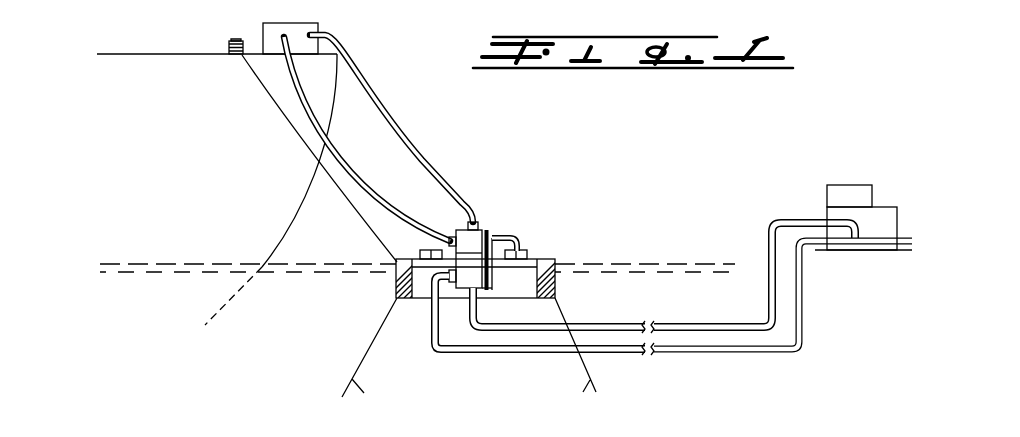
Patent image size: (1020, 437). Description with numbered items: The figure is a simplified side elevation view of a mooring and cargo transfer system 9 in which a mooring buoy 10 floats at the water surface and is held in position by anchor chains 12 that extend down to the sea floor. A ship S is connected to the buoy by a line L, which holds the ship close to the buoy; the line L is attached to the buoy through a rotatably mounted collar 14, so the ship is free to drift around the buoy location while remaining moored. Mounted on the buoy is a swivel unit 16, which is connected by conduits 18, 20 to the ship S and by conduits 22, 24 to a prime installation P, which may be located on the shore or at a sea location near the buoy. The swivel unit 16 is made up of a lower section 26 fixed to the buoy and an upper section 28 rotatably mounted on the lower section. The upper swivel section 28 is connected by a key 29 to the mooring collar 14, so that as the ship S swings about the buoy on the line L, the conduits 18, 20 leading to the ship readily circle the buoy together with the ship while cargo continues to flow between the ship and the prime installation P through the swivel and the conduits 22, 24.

The mooring and cargo transfer system 9 is at (471, 184).
The mooring buoy 10 is at (558, 257).
The anchor chains 12 is at (469, 352).
The rotatably mounted collar 14 is at (528, 253).
The swivel unit 16 is at (487, 220).
The conduit 18 is at (393, 194).
The conduit 20 is at (418, 152).
The conduit 22 is at (692, 356).
The conduit 24 is at (706, 304).
The lower section 26 is at (490, 298).
The upper section 28 is at (498, 228).
The key 29 is at (519, 240).
The ship S is at (163, 55).
The line L is at (344, 213).
The prime installation P is at (888, 212).